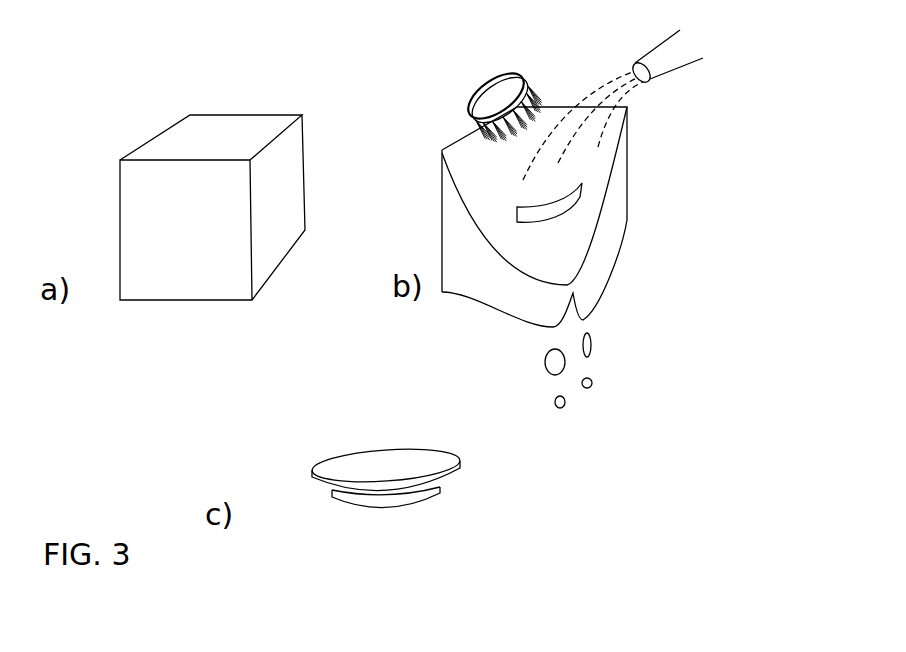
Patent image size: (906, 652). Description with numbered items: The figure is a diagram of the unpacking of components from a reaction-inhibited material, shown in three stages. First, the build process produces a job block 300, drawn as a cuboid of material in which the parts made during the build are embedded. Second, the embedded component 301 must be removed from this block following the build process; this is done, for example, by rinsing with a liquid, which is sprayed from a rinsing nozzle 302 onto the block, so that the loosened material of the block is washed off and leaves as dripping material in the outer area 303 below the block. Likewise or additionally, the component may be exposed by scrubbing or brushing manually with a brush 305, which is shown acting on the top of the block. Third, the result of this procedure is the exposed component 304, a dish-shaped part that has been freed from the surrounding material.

The job block 300 is at (147, 201).
The embedded component 301 is at (525, 203).
The rinsing nozzle 302 is at (661, 82).
The dripping material in the outer area 303 is at (606, 366).
The exposed component 304 is at (327, 471).
The brush 305 is at (482, 92).